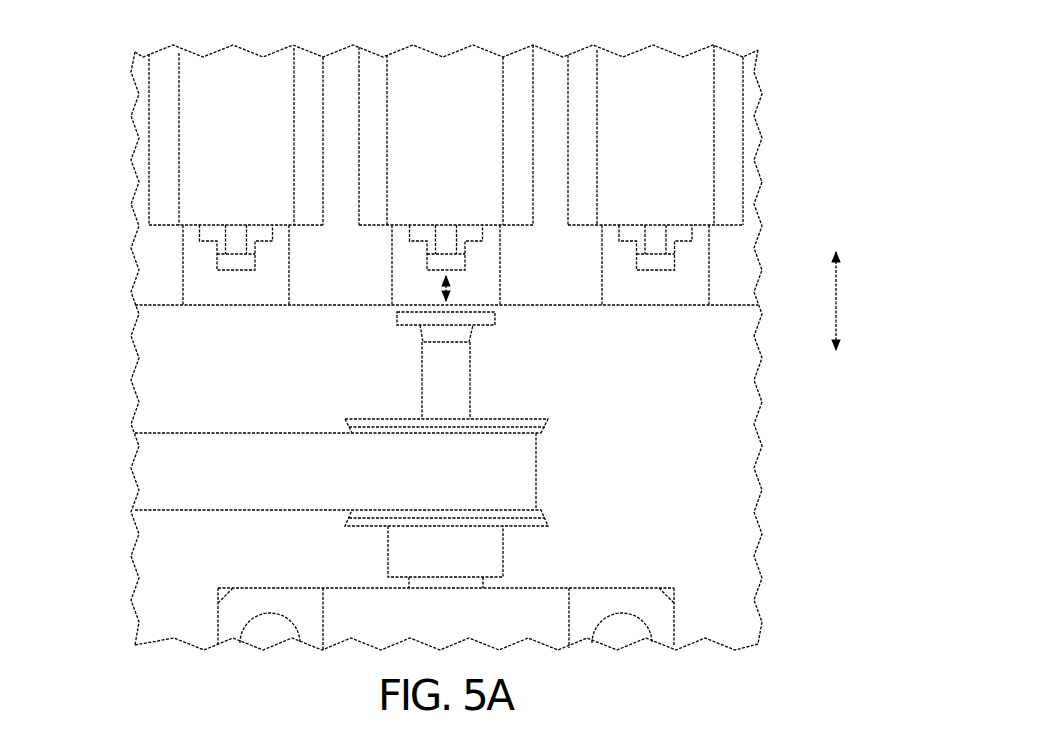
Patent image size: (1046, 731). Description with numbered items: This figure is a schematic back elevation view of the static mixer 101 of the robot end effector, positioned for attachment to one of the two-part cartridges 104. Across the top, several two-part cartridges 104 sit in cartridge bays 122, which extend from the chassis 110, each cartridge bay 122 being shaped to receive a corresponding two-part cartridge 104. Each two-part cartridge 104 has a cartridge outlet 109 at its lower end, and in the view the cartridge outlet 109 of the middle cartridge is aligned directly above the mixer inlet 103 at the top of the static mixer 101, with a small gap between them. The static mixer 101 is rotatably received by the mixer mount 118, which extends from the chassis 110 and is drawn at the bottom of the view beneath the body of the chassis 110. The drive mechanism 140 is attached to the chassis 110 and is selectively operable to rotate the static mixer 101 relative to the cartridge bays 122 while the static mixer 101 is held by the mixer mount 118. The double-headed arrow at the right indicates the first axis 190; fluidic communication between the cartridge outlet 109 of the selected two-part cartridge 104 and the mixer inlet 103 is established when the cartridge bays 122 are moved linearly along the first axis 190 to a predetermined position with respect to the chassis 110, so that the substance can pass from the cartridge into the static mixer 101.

The two-part cartridge 104 is at (176, 58).
The cartridge bay 122 is at (762, 128).
The drive mechanism 140 is at (108, 438).
The first axis 190 is at (838, 292).
The mixer inlet 103 is at (405, 304).
The cartridge outlet 109 is at (468, 275).
The static mixer 101 is at (422, 395).
The chassis 110 is at (750, 548).
The mixer mount 118 is at (675, 623).